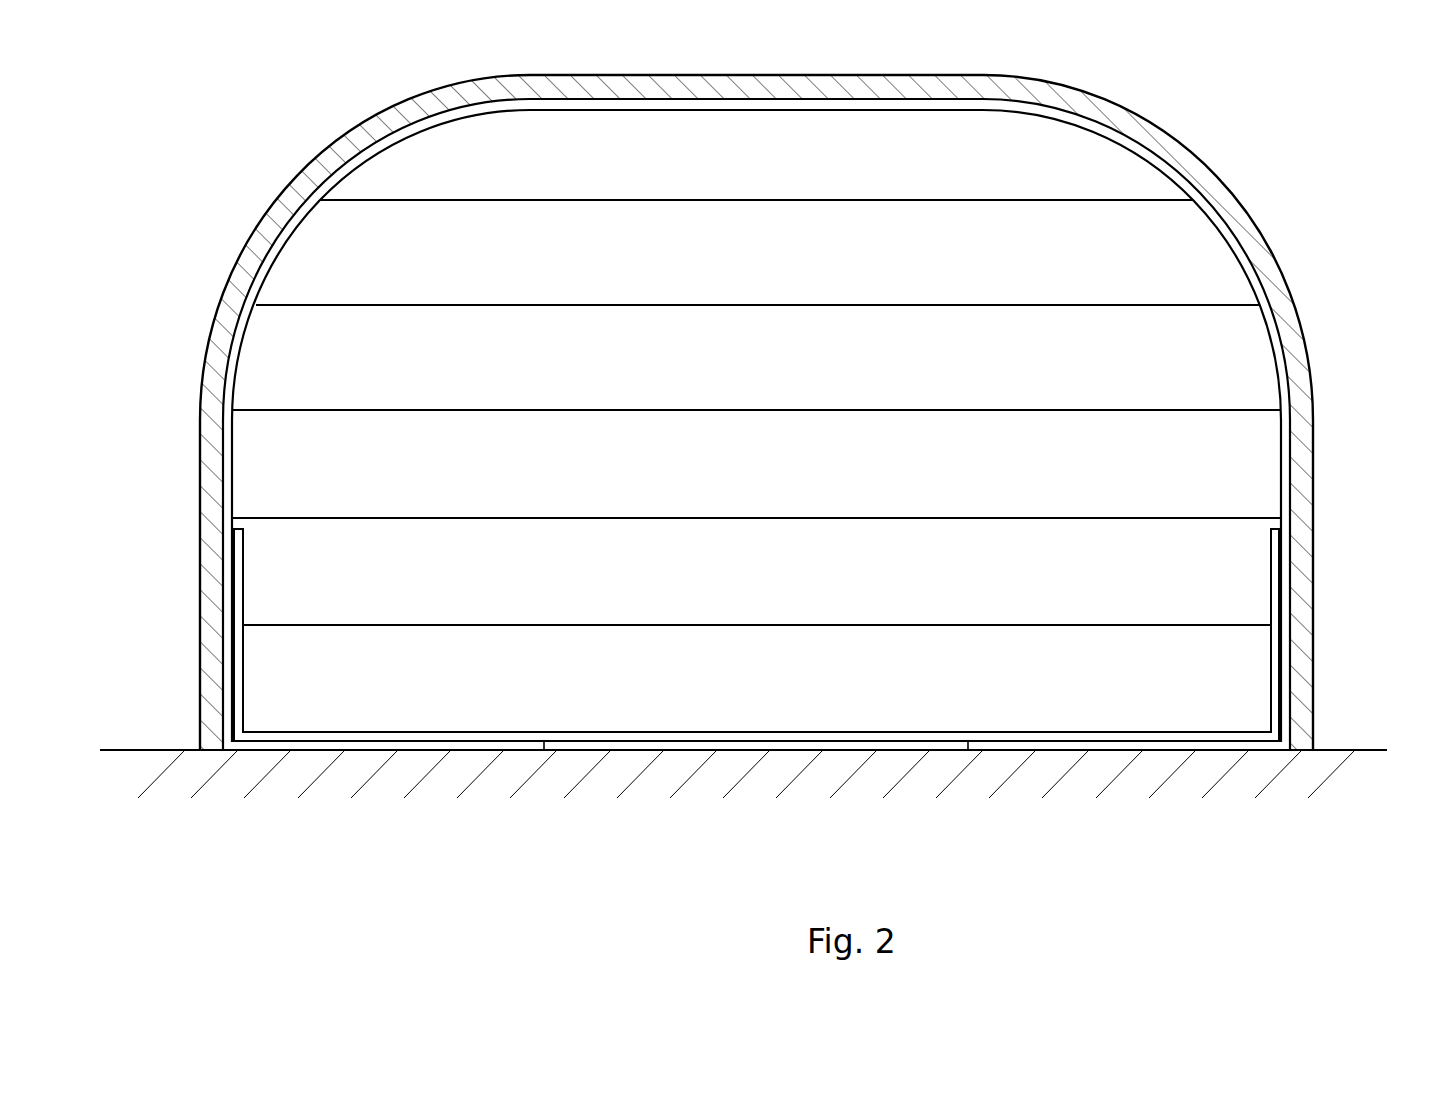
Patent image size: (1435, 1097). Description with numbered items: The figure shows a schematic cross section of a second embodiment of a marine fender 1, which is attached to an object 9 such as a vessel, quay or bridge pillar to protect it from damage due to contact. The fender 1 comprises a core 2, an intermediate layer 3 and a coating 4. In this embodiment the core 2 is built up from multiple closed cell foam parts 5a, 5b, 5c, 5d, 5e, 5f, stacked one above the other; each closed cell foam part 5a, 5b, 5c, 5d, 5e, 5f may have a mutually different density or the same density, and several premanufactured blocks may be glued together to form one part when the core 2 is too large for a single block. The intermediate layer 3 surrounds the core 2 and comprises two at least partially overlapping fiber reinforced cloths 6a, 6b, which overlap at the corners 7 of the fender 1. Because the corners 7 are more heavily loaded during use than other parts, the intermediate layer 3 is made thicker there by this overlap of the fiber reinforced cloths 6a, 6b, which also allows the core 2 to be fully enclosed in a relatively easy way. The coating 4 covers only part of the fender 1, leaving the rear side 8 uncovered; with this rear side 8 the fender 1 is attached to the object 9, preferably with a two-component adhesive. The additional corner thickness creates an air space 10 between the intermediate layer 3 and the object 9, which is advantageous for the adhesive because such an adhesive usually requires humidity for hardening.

The fender 1 is at (1235, 130).
The core 2 is at (365, 697).
The intermediate layer 3 is at (887, 750).
The coating 4 is at (1305, 716).
The closed cell foam part 5a is at (1243, 663).
The closed cell foam part 5b is at (1241, 566).
The closed cell foam part 5c is at (1240, 452).
The closed cell foam part 5d is at (1216, 342).
The closed cell foam part 5e is at (1157, 230).
The closed cell foam part 5f is at (1047, 146).
The fiber reinforced cloth 6a is at (563, 736).
The fiber reinforced cloth 6b is at (509, 746).
The corner 7 is at (240, 779).
The rear side 8 is at (709, 778).
The object 9 is at (137, 784).
The air space 10 is at (777, 746).